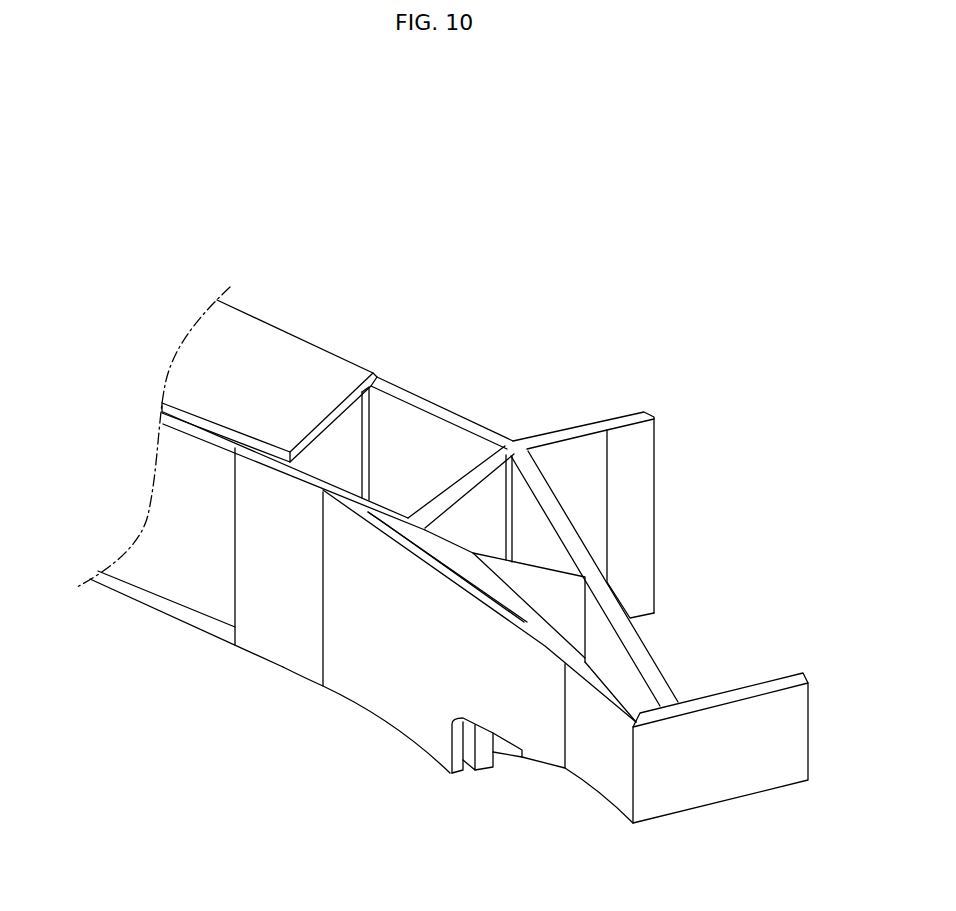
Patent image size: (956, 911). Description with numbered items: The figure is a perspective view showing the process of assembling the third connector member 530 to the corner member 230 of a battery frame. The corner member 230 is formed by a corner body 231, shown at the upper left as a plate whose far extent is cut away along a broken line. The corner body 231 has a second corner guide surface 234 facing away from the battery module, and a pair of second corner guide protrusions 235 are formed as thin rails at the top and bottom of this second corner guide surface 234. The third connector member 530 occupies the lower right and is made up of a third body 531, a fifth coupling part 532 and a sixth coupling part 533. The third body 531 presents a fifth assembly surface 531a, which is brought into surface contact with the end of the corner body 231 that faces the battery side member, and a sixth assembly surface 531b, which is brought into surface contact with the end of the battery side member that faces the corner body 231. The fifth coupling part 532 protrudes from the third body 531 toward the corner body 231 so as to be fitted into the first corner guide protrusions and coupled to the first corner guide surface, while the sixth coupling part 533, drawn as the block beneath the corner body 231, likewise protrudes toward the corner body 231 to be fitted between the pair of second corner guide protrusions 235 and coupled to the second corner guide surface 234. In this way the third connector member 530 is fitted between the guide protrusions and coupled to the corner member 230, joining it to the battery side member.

The corner member 230 is at (290, 232).
The corner body 231 is at (260, 340).
The second corner guide surface 234 is at (162, 538).
The second corner guide protrusion 235 is at (190, 422).
The third connector member 530 is at (316, 784).
The third body 531 is at (490, 575).
The fifth assembly surface 531a is at (460, 455).
The sixth assembly surface 531b is at (607, 583).
The fifth coupling part 532 is at (458, 414).
The sixth coupling part 533 is at (283, 605).